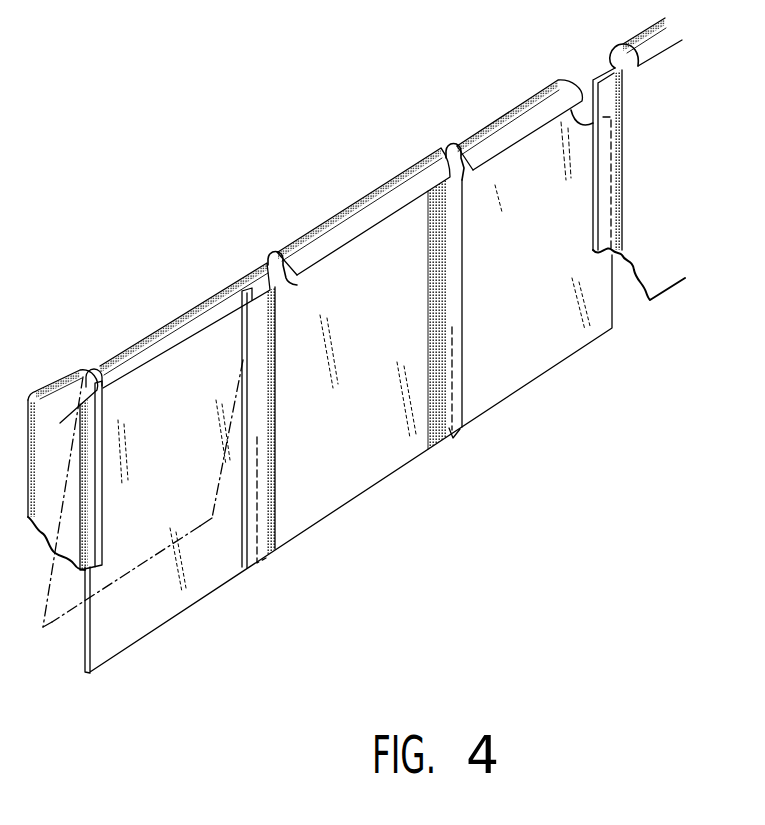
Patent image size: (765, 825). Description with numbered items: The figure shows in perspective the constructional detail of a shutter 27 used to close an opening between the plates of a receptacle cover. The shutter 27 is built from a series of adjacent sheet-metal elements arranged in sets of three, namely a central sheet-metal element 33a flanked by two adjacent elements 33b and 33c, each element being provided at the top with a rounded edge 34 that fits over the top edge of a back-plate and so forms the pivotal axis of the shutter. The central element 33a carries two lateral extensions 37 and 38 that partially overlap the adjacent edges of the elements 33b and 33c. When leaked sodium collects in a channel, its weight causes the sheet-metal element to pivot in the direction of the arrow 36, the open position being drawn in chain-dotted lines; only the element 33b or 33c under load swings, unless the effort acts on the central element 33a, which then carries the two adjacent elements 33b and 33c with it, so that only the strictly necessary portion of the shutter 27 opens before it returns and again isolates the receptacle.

The shutter 27 is at (386, 500).
The central sheet-metal element 33a is at (378, 348).
The sheet-metal element 33b is at (537, 277).
The sheet-metal element 33c is at (173, 462).
The rounded edge 34 is at (344, 236).
The arrow 36 is at (50, 642).
The lateral extension 37 is at (261, 563).
The lateral extension 38 is at (450, 443).